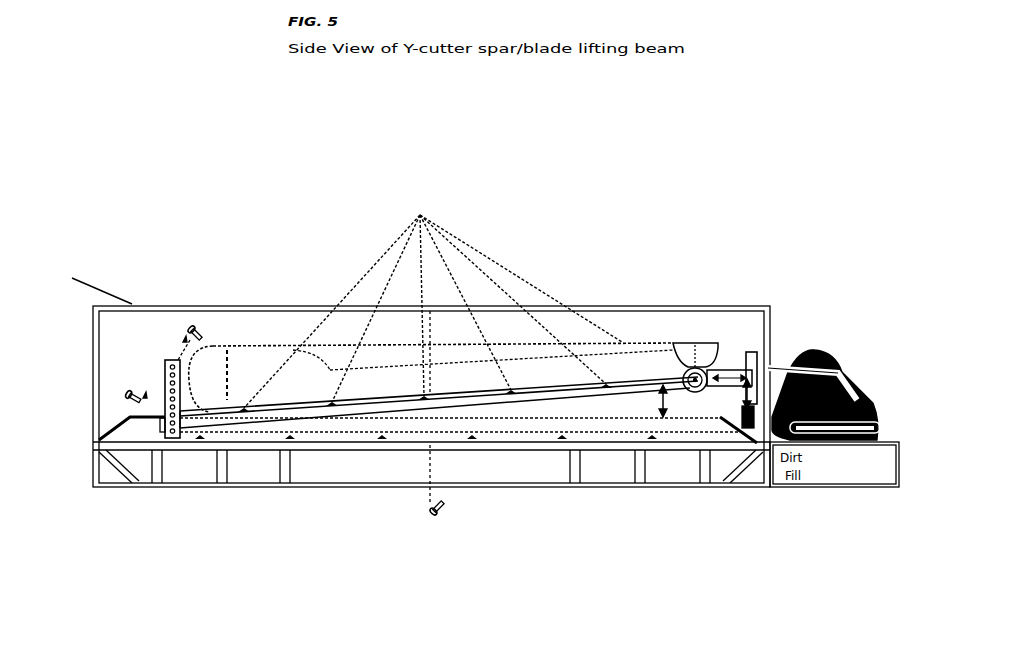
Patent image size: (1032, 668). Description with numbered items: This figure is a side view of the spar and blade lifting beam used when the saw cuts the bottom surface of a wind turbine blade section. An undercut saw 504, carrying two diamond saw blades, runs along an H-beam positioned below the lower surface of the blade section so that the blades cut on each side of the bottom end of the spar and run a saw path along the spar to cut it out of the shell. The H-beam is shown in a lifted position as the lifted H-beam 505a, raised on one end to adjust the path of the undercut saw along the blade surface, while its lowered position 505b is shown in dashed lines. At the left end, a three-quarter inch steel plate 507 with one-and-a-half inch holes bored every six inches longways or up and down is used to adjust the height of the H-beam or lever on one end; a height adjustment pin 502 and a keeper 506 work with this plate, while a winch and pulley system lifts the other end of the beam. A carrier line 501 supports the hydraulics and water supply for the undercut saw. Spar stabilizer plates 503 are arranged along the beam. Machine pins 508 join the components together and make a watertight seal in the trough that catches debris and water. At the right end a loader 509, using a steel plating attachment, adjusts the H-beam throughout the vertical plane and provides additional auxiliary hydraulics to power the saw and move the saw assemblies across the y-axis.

The carrier line 501 is at (75, 258).
The height adjustment pin 502 is at (192, 310).
The spar stabilizer plates 503 is at (426, 300).
The undercut saw 504 is at (695, 380).
The lifted H-beam 505a is at (738, 370).
The lowered position of H-beam 505b is at (727, 435).
The keeper 506 is at (118, 393).
The steel plate 507 is at (172, 438).
The machine pins 508 is at (505, 572).
The loader 509 is at (816, 491).